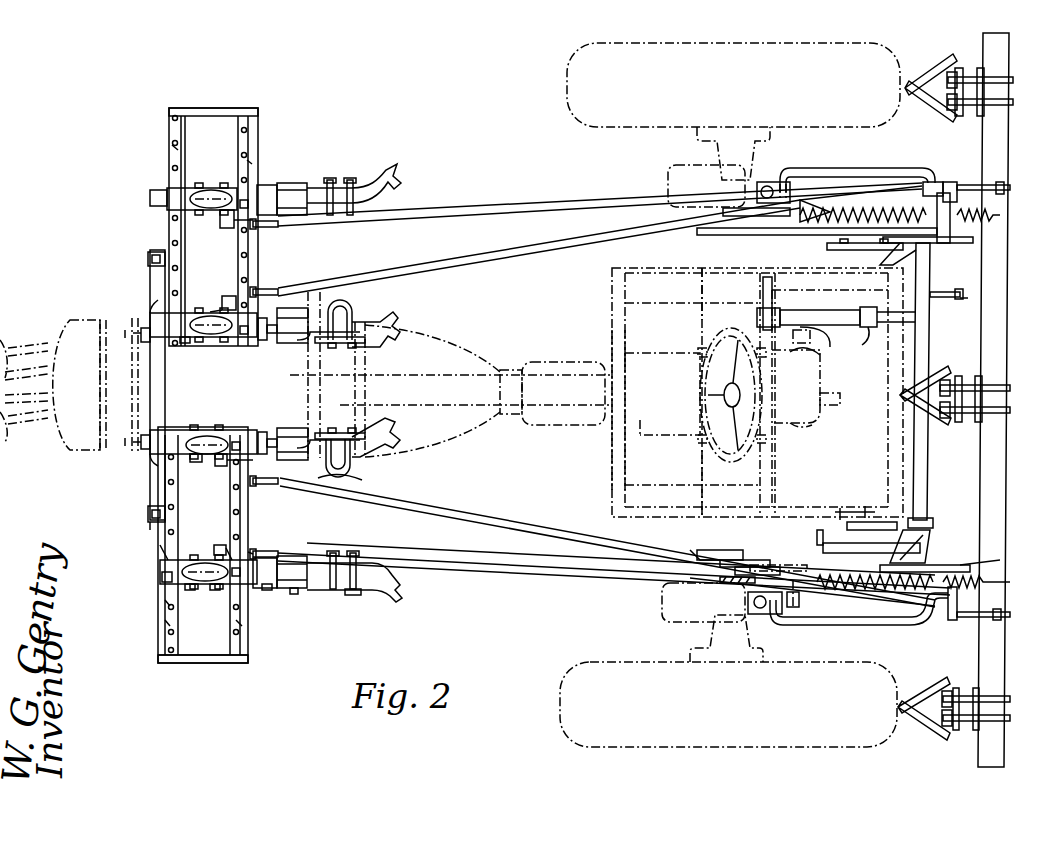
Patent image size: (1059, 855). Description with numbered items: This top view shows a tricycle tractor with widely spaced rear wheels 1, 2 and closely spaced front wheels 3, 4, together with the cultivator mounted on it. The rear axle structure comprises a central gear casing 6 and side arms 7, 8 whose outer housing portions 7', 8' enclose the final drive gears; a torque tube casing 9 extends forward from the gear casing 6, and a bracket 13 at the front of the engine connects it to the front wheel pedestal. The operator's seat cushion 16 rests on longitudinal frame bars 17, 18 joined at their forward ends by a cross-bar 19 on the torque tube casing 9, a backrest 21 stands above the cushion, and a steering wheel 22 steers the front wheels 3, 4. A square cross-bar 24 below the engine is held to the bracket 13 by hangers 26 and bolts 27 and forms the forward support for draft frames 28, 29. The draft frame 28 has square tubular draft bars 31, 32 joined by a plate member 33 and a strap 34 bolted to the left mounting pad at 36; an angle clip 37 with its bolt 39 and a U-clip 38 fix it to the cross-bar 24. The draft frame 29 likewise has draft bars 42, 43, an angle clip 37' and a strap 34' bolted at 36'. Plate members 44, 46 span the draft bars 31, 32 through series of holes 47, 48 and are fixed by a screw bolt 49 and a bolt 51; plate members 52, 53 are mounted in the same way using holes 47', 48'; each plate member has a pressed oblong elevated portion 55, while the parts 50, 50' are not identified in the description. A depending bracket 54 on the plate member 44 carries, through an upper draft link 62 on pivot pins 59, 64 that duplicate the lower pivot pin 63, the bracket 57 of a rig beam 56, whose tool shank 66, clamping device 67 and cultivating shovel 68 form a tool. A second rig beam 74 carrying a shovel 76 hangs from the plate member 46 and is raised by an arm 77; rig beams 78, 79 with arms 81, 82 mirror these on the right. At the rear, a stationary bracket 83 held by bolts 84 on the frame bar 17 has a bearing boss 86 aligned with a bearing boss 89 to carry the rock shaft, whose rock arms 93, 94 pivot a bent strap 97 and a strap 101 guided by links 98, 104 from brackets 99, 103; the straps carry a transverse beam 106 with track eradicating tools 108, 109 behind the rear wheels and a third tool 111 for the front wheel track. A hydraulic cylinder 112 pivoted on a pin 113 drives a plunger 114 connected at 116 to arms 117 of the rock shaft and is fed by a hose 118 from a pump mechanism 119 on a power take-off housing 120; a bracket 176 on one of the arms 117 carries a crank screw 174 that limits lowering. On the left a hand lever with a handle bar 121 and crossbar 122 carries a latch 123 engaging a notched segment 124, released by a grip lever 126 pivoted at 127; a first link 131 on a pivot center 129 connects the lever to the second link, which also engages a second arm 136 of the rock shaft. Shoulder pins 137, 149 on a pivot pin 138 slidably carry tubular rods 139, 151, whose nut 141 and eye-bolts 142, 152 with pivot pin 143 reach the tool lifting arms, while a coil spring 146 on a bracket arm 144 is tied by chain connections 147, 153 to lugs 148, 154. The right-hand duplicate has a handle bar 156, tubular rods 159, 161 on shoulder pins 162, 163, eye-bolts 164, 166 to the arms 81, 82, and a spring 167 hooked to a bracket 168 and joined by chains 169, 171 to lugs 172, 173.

The rear wheel 1 is at (626, 742).
The rear wheel 2 is at (626, 122).
The front wheel 3 is at (24, 424).
The front wheel 4 is at (45, 338).
The central gear casing 6 is at (662, 357).
The side arm 7 is at (694, 483).
The outer housing portion 7' is at (692, 609).
The side arm 8 is at (692, 294).
The outer housing portion 8' is at (692, 184).
The torque tube casing 9 is at (472, 378).
The bracket 13 is at (136, 360).
The seat cushion 16 is at (842, 475).
The longitudinal frame bar 17 is at (652, 482).
The longitudinal frame bar 18 is at (650, 300).
The cross-bar 19 is at (612, 460).
The backrest 21 is at (935, 370).
The steering wheel 22 is at (702, 372).
The square cross-bar 24 is at (150, 272).
The hangers 26 is at (152, 320).
The bolts 27 is at (140, 338).
The draft frame 28 is at (158, 636).
The draft frame 29 is at (169, 134).
The draft bar 31 is at (178, 506).
The draft bar 32 is at (248, 508).
The plate member 33 is at (200, 663).
The strap 34 is at (283, 433).
The strap 34' is at (306, 338).
The bolted connection 36 is at (331, 427).
The bolted connection 36' is at (331, 355).
The angle clip 37 is at (134, 529).
The angle clip 37' is at (151, 247).
The U-clip 38 is at (150, 304).
The bolt 39 is at (150, 512).
The draft bar 42 is at (185, 150).
The draft bar 43 is at (258, 140).
The plate member 44 is at (165, 558).
The plate member 46 is at (196, 462).
The series of holes 47 is at (150, 613).
The series of holes 47' is at (158, 158).
The series of holes 48 is at (255, 634).
The series of holes 48' is at (270, 161).
The screw bolt 49 is at (162, 580).
The mounting plate 50 is at (187, 572).
The nut 50' is at (223, 597).
The bolt 51 is at (252, 550).
The plate member 52 is at (167, 201).
The plate member 53 is at (186, 343).
The bracket 54 is at (190, 590).
The oblong elevated portion 55 is at (232, 195).
The rig beam 56 is at (392, 590).
The bracket 57 is at (300, 590).
The pivot pin 59 is at (214, 548).
The upper draft link 62 is at (265, 586).
The pivot pin 63 is at (294, 594).
The pivot pin 64 is at (270, 592).
The tool shank 66 is at (345, 556).
The clamping device 67 is at (352, 596).
The cultivating shovel 68 is at (300, 554).
The rig beam 74 is at (392, 440).
The cultivating shovel 76 is at (345, 478).
The arm 77 is at (218, 468).
The rig beam 78 is at (385, 195).
The rig beam 79 is at (385, 330).
The arm 81 is at (221, 222).
The arm 82 is at (225, 300).
The stationary bracket 83 is at (866, 498).
The bolts 84 is at (843, 510).
The bearing boss 86 is at (933, 523).
The bearing boss 89 is at (928, 268).
The rock arm 93 is at (1010, 614).
The rock arm 94 is at (1010, 189).
The bent strap 97 is at (955, 620).
The link 98 is at (845, 626).
The bracket 99 is at (760, 616).
The strap 101 is at (968, 184).
The bracket 103 is at (778, 180).
The link 104 is at (868, 176).
The transverse beam 106 is at (1004, 276).
The track eradicating tool 108 is at (928, 740).
The track eradicating tool 109 is at (946, 72).
The track eradicating tool 111 is at (938, 424).
The hydraulic cylinder 112 is at (812, 304).
The pin 113 is at (763, 292).
The plunger 114 is at (862, 310).
The pivotal connection 116 is at (872, 343).
The arms 117 is at (830, 335).
The hose 118 is at (826, 340).
The pump mechanism 119 is at (806, 386).
The power take-off housing 120 is at (806, 424).
The handle bar 121 is at (716, 550).
The crossbar 122 is at (873, 541).
The latch 123 is at (817, 535).
The notched segment 124 is at (847, 526).
The grip lever 126 is at (692, 552).
The pivot 127 is at (745, 567).
The pivot center 129 is at (876, 590).
The first link 131 is at (928, 562).
The second arm 136 is at (1000, 560).
The shoulder pin 137 is at (918, 630).
The pivot pin 138 is at (946, 622).
The tubular rod 139 is at (577, 568).
The nut 141 is at (270, 546).
The eye-bolt 142 is at (258, 550).
The pivot pin 143 is at (230, 548).
The bracket arm 144 is at (990, 584).
The coil spring 146 is at (835, 596).
The chain connection 147 is at (796, 600).
The lug 148 is at (728, 584).
The shoulder pin 149 is at (942, 565).
The second tubular rod 151 is at (578, 539).
The eye-bolt 152 is at (266, 484).
The chain connection 153 is at (790, 558).
The lug 154 is at (735, 560).
The handle bar 156 is at (826, 246).
The tubular rod 159 is at (510, 222).
The tubular rod 161 is at (494, 258).
The shoulder pin 162 is at (938, 182).
The shoulder pin 163 is at (942, 243).
The eye-bolt 164 is at (268, 228).
The eye-bolt 166 is at (270, 283).
The spring 167 is at (862, 210).
The bracket 168 is at (1000, 215).
The chain 169 is at (802, 212).
The chain 171 is at (782, 235).
The lug 172 is at (757, 188).
The lug 173 is at (728, 217).
The crank screw 174 is at (960, 300).
The bracket 176 is at (940, 300).